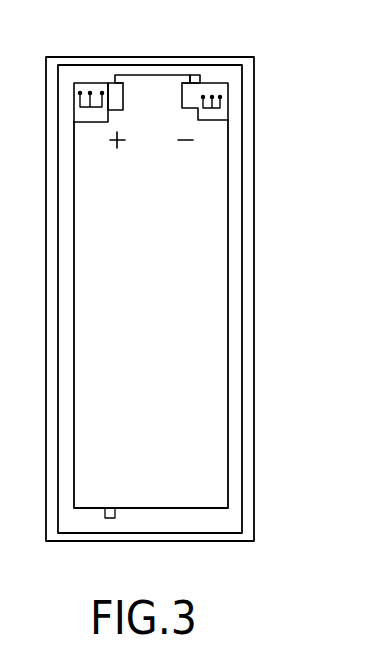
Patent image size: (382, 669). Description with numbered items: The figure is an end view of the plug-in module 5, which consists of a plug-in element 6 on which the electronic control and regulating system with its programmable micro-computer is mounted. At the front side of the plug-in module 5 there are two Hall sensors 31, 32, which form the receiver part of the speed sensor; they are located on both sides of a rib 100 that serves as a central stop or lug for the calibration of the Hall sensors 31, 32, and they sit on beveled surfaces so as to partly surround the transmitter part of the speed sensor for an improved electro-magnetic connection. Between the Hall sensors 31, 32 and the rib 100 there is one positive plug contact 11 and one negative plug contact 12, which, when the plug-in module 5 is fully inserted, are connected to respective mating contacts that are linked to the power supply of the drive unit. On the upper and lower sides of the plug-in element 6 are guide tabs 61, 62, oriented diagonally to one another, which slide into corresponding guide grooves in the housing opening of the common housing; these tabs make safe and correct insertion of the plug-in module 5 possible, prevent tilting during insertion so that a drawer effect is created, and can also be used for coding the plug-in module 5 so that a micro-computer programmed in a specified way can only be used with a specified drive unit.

The plug-in module 5 is at (290, 190).
The plug-in element 6 is at (213, 337).
The guide tab 61 is at (110, 519).
The guide tab 62 is at (199, 79).
The rib 100 is at (160, 74).
The Hall sensor 31 is at (80, 107).
The Hall sensor 32 is at (221, 99).
The positive plug contact 11 is at (107, 126).
The negative plug contact 12 is at (190, 123).